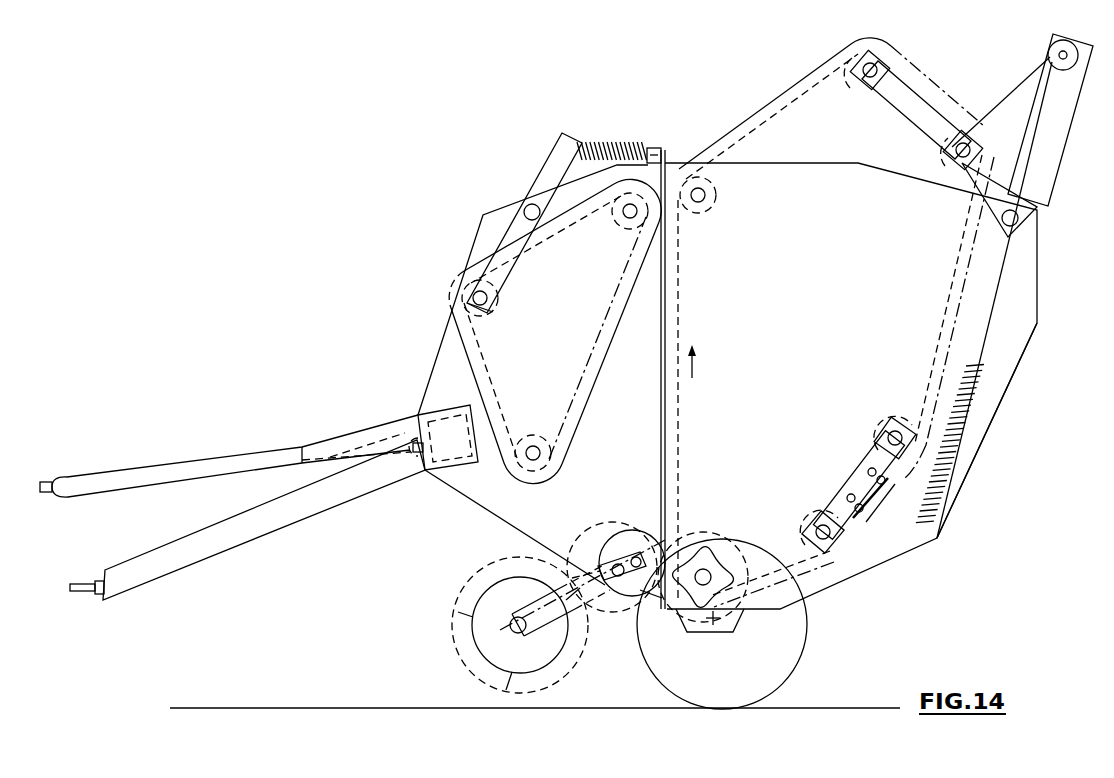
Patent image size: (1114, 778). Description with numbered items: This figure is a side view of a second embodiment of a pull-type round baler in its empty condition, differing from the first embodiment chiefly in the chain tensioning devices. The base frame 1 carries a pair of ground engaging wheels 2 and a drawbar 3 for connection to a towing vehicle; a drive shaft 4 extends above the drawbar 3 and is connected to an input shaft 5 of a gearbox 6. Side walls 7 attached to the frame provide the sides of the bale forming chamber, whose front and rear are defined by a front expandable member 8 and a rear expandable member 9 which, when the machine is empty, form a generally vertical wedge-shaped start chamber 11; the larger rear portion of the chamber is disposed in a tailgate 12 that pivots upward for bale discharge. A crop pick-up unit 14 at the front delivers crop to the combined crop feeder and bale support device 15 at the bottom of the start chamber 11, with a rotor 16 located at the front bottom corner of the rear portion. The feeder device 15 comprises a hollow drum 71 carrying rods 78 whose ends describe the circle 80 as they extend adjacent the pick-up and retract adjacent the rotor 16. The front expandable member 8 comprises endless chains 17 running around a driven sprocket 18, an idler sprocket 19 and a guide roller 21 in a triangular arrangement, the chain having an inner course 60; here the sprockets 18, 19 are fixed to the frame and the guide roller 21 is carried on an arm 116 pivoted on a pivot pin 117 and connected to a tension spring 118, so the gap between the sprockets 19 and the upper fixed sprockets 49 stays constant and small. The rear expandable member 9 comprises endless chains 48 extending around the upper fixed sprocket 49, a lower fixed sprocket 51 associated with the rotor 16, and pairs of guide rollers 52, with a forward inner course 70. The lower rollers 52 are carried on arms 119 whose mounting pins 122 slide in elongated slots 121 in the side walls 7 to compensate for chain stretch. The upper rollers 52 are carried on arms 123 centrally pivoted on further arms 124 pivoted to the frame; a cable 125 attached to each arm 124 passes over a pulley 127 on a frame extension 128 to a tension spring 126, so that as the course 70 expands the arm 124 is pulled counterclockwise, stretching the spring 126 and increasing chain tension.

The base frame 1 is at (820, 604).
The ground engaging wheels 2 is at (785, 658).
The drawbar 3 is at (270, 527).
The drive shaft 4 is at (212, 463).
The input shaft 5 is at (415, 470).
The gearbox 6 is at (455, 468).
The side walls 7 is at (663, 185).
The front expandable member 8 is at (458, 355).
The rear expandable member 9 is at (990, 306).
The start chamber 11 is at (628, 418).
The tailgate 12 is at (1005, 386).
The crop pick-up unit 14 is at (458, 582).
The combined crop feeder and bale support device 15 is at (629, 524).
The rotor 16 is at (716, 540).
The endless chains 17 is at (484, 372).
The driven sprocket 18 is at (533, 445).
The idler sprocket 19 is at (622, 222).
The guide roller 21 is at (494, 306).
The endless chains 48 is at (680, 320).
The upper fixed sprocket 49 is at (708, 206).
The lower fixed sprocket 51 is at (724, 542).
The guide rollers 52 is at (862, 82).
The inner course 60 is at (617, 340).
The inner course 70 is at (660, 378).
The hollow drum 71 is at (656, 600).
The rods 78 is at (585, 600).
The circle 80 is at (600, 540).
The arms 116 is at (505, 248).
The pivot pin 117 is at (528, 206).
The tension spring 118 is at (612, 150).
The arms 119 is at (867, 487).
The elongated slots 121 is at (880, 512).
The mounting pins 122 is at (872, 466).
The arms 123 is at (905, 92).
The further arm 124 is at (975, 172).
The cable 125 is at (993, 104).
The tension spring 126 is at (950, 452).
The pulley 127 is at (1048, 55).
The extension 128 is at (1068, 140).